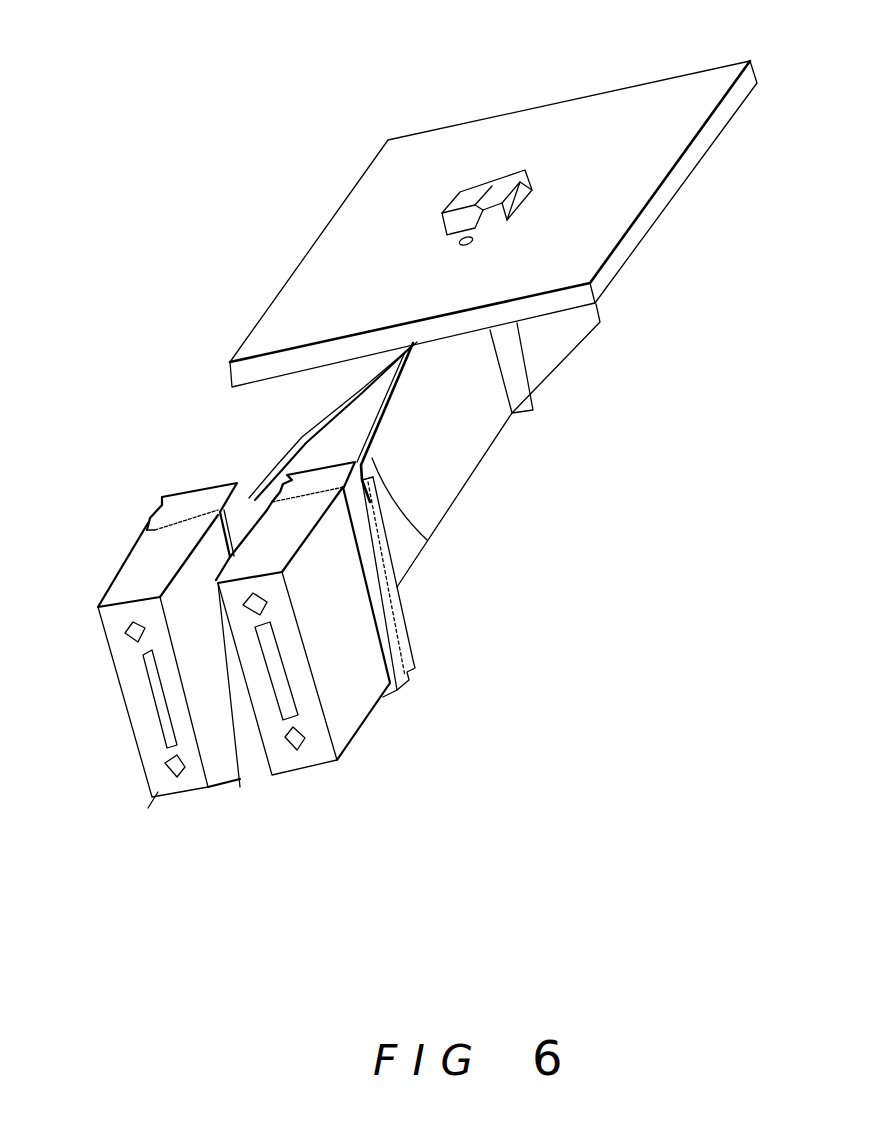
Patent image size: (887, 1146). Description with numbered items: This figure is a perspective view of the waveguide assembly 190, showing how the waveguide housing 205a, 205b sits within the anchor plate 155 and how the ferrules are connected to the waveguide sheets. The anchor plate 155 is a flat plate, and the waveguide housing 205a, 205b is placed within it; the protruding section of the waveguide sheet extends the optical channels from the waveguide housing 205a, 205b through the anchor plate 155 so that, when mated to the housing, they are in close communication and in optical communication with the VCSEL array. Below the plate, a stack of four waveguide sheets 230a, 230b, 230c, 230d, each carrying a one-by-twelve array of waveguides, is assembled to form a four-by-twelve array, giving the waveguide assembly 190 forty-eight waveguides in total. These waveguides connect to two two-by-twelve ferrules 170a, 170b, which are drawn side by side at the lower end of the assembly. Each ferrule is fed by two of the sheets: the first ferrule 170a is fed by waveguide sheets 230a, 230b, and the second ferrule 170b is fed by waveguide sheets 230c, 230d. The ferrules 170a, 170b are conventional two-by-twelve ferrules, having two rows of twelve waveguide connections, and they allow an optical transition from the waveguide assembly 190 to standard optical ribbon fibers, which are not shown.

The waveguide assembly 190 is at (419, 479).
The anchor plate 155 is at (516, 224).
The waveguide housing 205b is at (424, 133).
The waveguide housing 205a is at (608, 404).
The waveguide sheet 230a is at (478, 445).
The waveguide sheet 230b is at (455, 587).
The waveguide sheet 230c is at (243, 416).
The waveguide sheet 230d is at (230, 422).
The 2×12 ferrule 170a is at (302, 712).
The 2×12 ferrule 170b is at (137, 708).